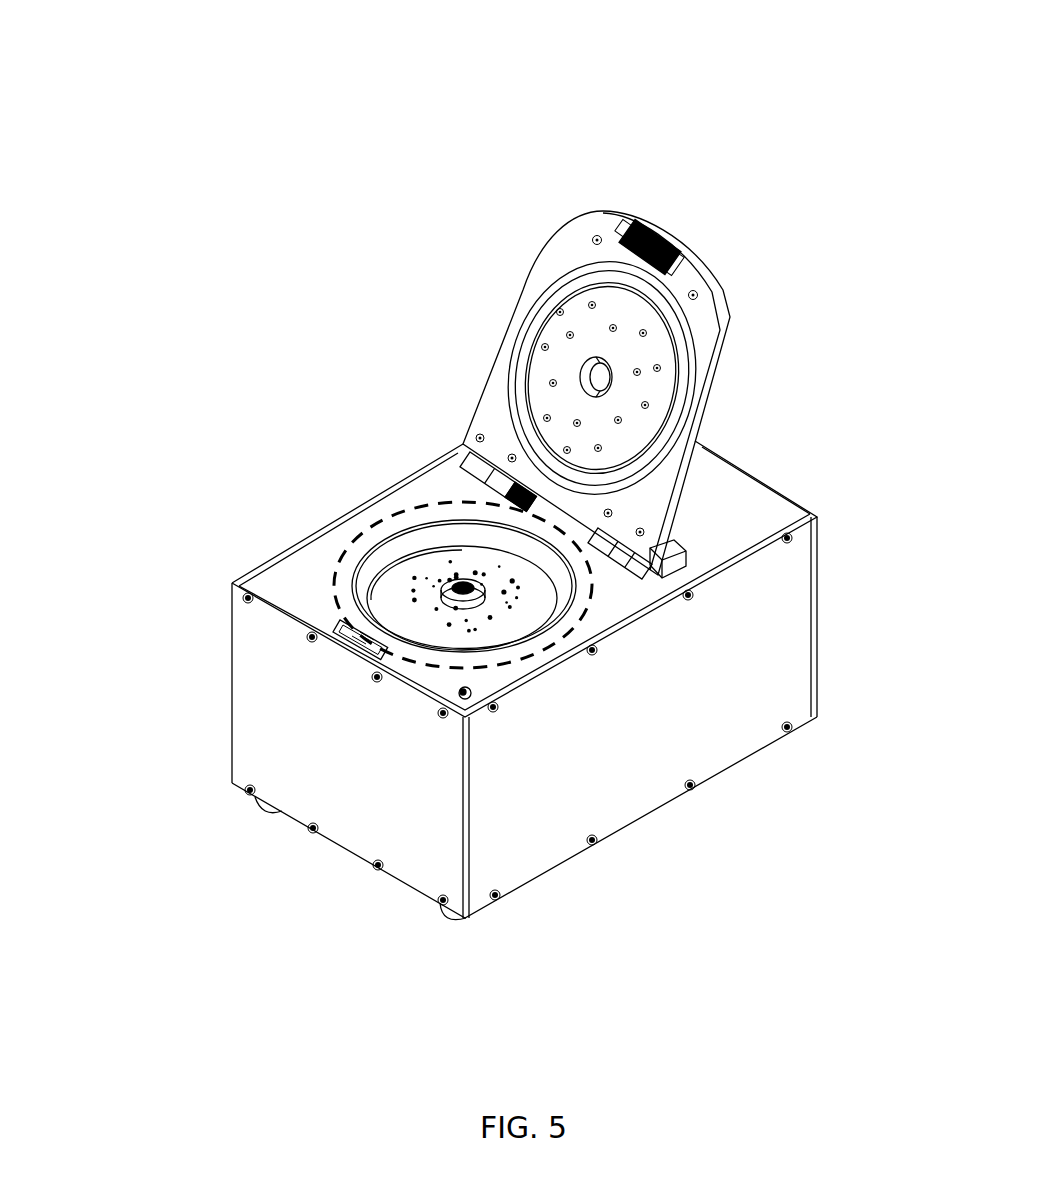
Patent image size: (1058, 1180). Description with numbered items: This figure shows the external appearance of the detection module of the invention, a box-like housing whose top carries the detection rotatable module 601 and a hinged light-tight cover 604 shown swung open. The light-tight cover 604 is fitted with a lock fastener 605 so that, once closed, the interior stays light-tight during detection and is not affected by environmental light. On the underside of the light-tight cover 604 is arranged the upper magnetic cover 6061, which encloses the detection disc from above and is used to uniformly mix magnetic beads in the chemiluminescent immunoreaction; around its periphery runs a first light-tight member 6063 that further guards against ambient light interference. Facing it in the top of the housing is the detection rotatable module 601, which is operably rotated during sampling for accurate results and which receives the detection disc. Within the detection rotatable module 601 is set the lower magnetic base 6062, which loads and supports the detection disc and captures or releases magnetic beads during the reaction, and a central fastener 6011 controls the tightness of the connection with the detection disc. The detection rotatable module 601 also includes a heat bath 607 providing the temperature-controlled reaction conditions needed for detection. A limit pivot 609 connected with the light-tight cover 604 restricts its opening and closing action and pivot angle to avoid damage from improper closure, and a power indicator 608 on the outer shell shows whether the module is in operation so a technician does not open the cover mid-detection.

The detection rotatable module 601 is at (530, 653).
The light-tight cover 604 is at (698, 328).
The lock fastener 605 is at (652, 225).
The upper magnetic cover 6061 is at (653, 387).
The lower magnetic base 6062 is at (397, 617).
The first light-tight member 6063 is at (673, 437).
The heat bath 607 is at (405, 547).
The fastener 6011 is at (440, 582).
The power indicator 608 is at (455, 693).
The limit pivot 609 is at (682, 548).